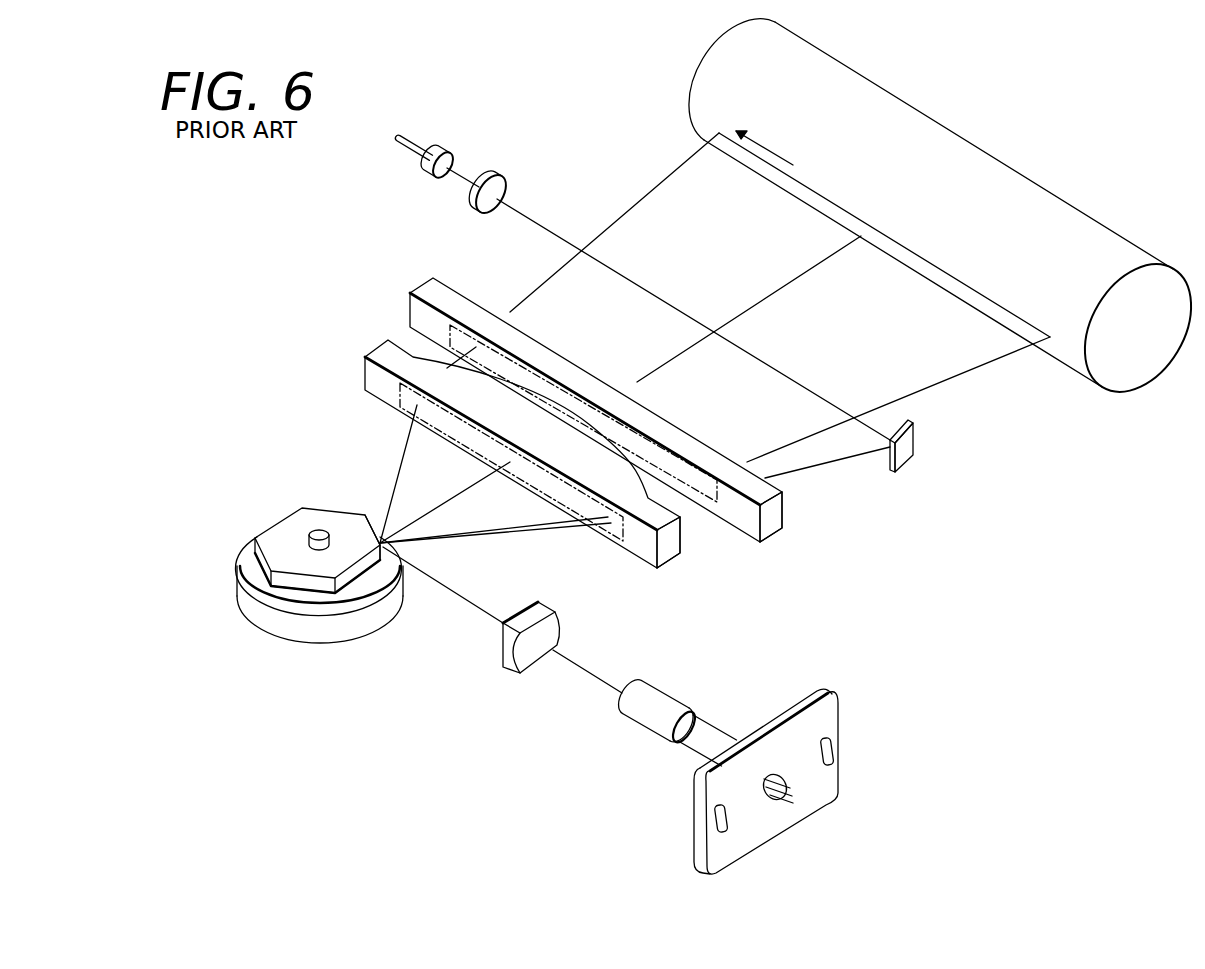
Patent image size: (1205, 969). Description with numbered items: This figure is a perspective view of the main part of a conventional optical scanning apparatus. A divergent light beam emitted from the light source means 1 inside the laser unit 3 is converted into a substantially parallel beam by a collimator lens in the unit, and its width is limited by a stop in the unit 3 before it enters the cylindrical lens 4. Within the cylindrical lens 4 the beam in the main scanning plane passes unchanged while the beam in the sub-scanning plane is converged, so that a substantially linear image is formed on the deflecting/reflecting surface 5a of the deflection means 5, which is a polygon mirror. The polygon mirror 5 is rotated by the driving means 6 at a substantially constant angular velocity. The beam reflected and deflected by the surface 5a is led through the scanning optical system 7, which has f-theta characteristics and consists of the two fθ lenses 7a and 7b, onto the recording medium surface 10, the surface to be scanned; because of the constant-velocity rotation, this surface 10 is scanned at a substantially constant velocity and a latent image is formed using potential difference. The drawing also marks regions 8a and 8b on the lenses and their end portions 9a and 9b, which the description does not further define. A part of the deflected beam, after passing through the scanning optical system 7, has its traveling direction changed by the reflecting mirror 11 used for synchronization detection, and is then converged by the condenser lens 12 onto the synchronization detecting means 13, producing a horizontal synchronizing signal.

The light source means 1 is at (773, 800).
The laser unit 3 is at (840, 762).
The cylindrical lens 4 is at (512, 658).
The deflection means 5 is at (296, 515).
The deflecting/reflecting surface 5a is at (367, 530).
The driving means 6 is at (308, 630).
The scanning optical system 7 is at (561, 406).
The fθ lens 7a is at (521, 436).
The fθ lens 7b is at (597, 399).
The effective light-passing region of first lens 8a is at (575, 503).
The effective light-passing region of second lens 8b is at (457, 330).
The end face of first lens 9a is at (643, 540).
The end face of second lens 9b is at (743, 515).
The recording medium surface 10 is at (905, 126).
The reflecting mirror (BD mirror) 11 is at (912, 444).
The condenser lens (BD lens) 12 is at (500, 189).
The synchronization detecting means (BD sensor) 13 is at (437, 150).